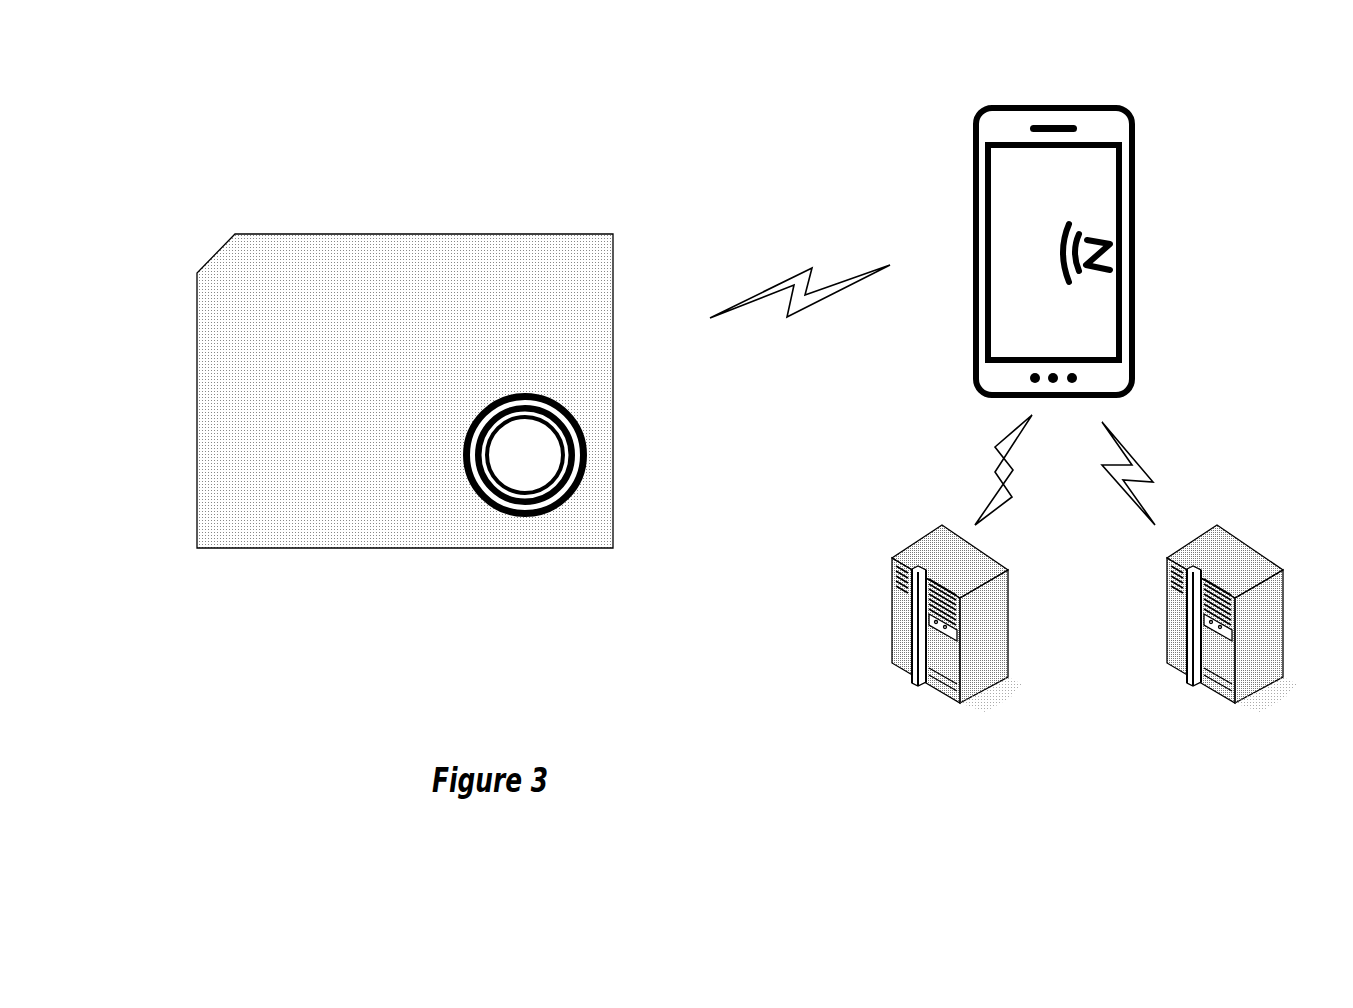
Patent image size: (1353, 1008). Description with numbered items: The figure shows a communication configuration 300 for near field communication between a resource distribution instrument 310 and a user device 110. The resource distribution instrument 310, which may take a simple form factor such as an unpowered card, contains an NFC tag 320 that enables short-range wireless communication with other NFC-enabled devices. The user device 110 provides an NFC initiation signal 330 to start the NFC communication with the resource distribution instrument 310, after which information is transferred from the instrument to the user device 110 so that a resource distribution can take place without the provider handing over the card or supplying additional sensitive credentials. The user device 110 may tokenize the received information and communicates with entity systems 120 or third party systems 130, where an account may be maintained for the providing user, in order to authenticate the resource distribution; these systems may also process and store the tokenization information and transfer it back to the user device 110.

The communication configuration 300 is at (714, 58).
The resource distribution instrument 310 is at (435, 219).
The NFC tag 320 is at (587, 443).
The user device 110 is at (1233, 76).
The NFC initiation signal 330 is at (1107, 243).
The entity systems 120 is at (968, 769).
The third party systems 130 is at (1243, 769).